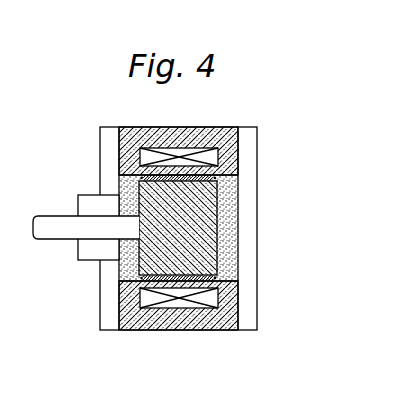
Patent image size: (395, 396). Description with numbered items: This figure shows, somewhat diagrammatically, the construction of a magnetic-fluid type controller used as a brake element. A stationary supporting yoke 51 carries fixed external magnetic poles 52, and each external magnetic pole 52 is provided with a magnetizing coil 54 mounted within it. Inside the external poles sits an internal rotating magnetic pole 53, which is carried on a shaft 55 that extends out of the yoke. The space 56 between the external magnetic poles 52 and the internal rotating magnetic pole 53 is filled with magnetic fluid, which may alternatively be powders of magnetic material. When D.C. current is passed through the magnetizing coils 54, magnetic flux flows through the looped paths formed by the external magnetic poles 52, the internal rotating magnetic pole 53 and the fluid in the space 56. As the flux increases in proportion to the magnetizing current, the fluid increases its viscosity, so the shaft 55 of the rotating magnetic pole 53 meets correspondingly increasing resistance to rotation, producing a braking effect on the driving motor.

The stationary supporting yoke 51 is at (250, 151).
The external magnetic pole 52 is at (183, 127).
The internal rotating magnetic pole 53 is at (208, 254).
The magnetizing coil 54 is at (205, 300).
The shaft 55 is at (48, 240).
The space 56 is at (217, 186).